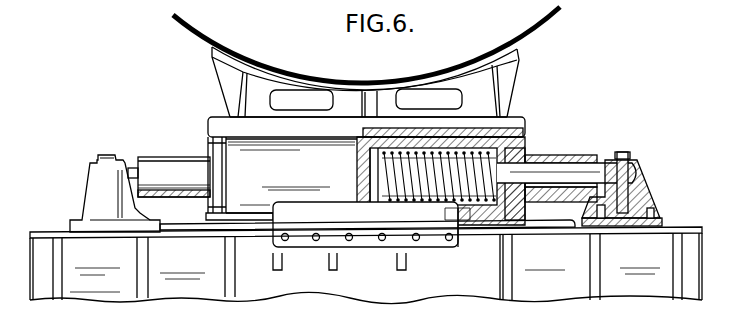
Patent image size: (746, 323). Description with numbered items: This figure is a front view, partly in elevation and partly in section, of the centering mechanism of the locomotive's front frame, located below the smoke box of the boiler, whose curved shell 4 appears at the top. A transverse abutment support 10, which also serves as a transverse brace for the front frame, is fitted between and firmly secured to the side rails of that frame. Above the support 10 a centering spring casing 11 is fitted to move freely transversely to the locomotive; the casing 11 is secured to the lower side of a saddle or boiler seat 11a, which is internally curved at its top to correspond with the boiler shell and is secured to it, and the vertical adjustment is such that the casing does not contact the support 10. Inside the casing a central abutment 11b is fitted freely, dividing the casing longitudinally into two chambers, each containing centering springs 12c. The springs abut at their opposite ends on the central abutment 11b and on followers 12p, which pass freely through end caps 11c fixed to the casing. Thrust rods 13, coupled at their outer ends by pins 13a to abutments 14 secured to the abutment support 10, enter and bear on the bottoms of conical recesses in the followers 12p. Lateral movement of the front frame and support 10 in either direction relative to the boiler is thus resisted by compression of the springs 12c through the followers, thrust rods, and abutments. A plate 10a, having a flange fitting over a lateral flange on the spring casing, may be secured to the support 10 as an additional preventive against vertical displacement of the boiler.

The rim 4 is at (205, 37).
The transverse abutment support 10 is at (270, 284).
The plate 10a is at (365, 236).
The centering spring casing 11 is at (347, 168).
The saddle or boiler seat 11a is at (228, 103).
The central abutment 11b is at (367, 182).
The end caps 11c is at (210, 150).
The followers 12p is at (196, 186).
The centering springs 12c is at (457, 223).
The thrust rods 13 is at (133, 168).
The pins 13a is at (626, 156).
The abutments 14 is at (87, 208).